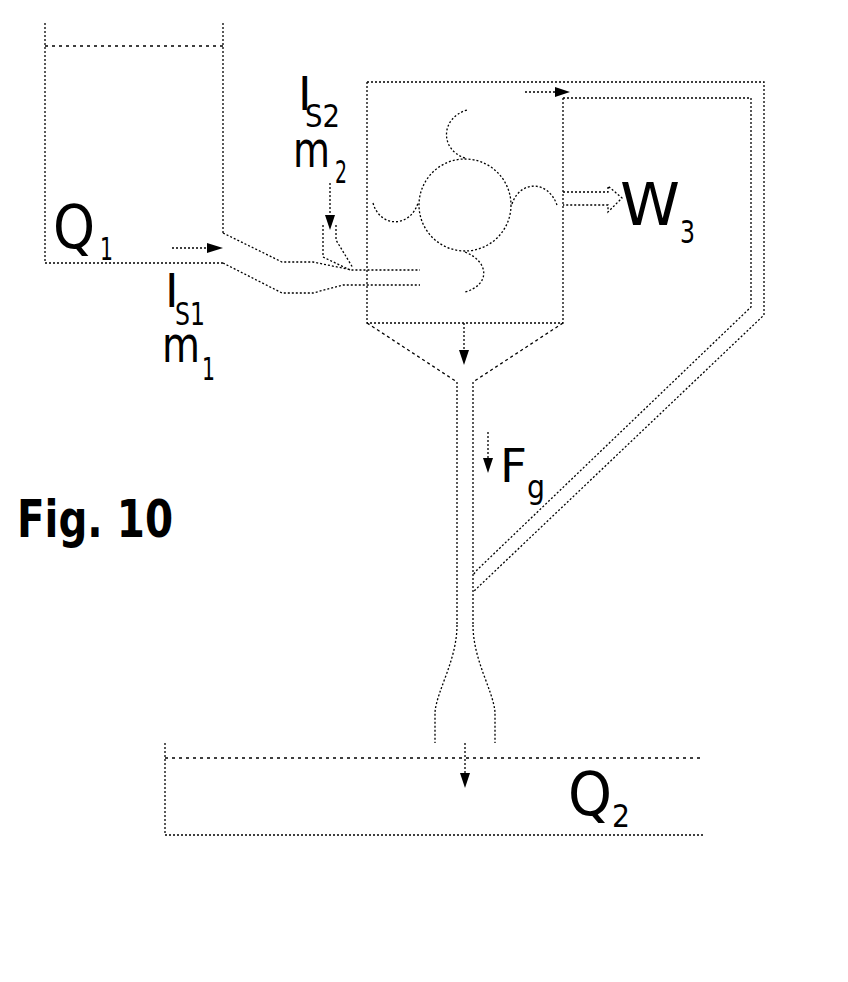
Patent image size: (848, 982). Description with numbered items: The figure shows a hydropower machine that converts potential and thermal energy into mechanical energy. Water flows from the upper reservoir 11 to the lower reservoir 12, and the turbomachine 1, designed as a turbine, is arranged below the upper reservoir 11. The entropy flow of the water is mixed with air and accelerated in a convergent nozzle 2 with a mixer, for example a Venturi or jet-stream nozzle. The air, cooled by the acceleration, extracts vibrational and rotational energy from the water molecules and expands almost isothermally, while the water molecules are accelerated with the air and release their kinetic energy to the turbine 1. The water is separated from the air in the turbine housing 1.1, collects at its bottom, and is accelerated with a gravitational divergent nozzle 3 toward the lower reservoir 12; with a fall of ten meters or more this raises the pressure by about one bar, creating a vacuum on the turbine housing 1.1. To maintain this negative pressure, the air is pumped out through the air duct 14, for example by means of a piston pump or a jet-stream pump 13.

The turbomachine 1 is at (465, 201).
The turbine housing 1.1 is at (465, 232).
The convergent nozzle 2 is at (321, 280).
The outlet nozzle 3 is at (465, 706).
The upper reservoir 11 is at (134, 143).
The lower reservoir 12 is at (434, 789).
The jet-stream pump 13 is at (430, 503).
The air duct 14 is at (618, 337).